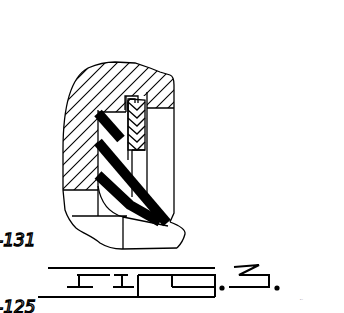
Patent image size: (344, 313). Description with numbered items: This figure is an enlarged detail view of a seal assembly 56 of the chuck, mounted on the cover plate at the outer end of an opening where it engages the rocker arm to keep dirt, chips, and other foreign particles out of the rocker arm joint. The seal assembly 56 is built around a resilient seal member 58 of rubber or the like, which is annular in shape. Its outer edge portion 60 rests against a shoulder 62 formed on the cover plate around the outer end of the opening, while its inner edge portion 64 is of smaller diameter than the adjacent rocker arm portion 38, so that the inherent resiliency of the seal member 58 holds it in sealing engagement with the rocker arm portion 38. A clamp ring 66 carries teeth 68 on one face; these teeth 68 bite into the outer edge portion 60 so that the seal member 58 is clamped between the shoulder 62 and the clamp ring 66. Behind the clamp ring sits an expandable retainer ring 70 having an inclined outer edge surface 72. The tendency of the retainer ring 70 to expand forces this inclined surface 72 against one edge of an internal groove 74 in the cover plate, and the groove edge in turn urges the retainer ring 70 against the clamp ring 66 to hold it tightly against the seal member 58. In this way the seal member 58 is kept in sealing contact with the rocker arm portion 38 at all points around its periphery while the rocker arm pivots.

The seal assembly 56 is at (154, 148).
The resilient seal member 58 is at (148, 202).
The outer edge portion 60 is at (107, 128).
The shoulder 62 is at (107, 143).
The inner edge portion 64 is at (168, 215).
The clamp ring 66 is at (126, 108).
The teeth 68 is at (100, 113).
The retainer ring 70 is at (148, 130).
The inclined outer edge surface 72 is at (170, 84).
The internal groove 74 is at (133, 100).
The rocker arm portion 38 is at (173, 226).